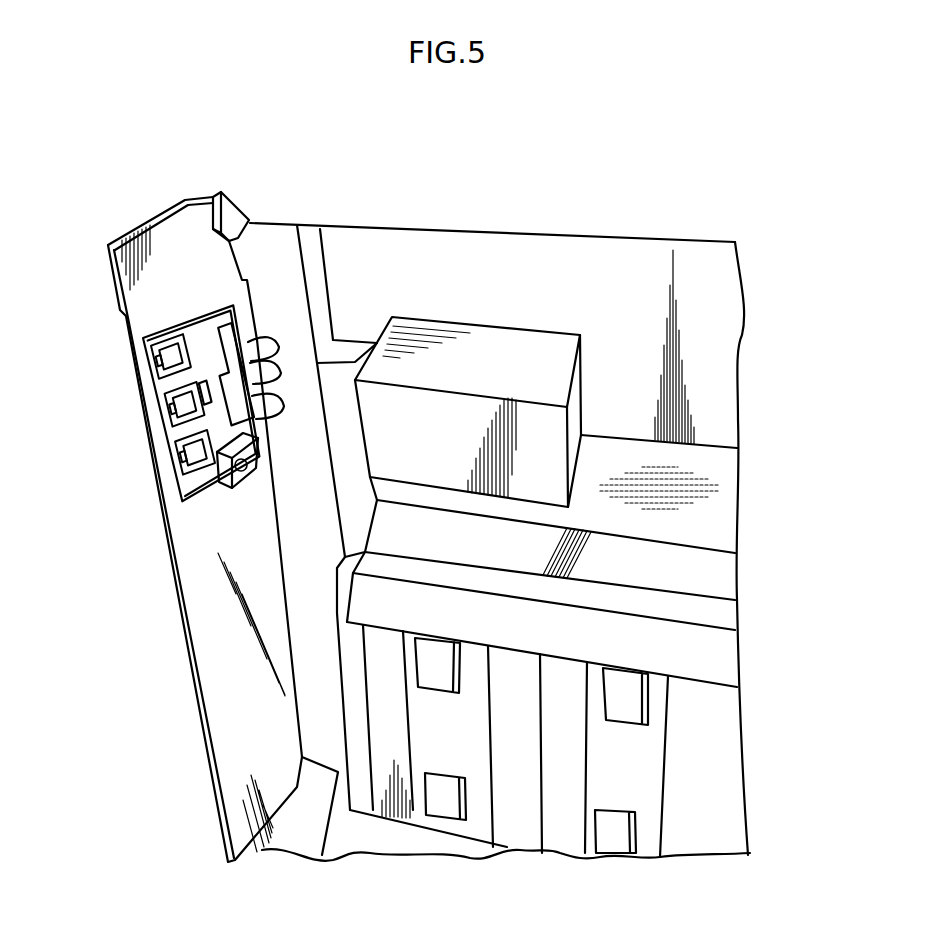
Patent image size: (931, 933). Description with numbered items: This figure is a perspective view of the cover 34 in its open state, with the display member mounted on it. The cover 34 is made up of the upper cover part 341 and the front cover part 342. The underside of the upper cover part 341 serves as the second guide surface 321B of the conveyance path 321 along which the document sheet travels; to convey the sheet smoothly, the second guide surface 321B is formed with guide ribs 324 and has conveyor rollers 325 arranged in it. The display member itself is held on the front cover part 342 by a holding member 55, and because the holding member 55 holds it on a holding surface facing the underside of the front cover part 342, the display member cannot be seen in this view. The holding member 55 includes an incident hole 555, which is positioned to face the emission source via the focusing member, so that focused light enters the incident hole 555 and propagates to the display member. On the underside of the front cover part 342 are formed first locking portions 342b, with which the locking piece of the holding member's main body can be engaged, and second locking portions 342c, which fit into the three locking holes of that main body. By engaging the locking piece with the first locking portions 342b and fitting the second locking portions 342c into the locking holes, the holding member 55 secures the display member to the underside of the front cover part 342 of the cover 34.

The cover 34 is at (442, 230).
The upper cover part 341 is at (652, 272).
The front cover part 342 is at (232, 672).
The first locking portions 342b is at (257, 340).
The second locking portions 342c is at (172, 355).
The holding member 55 is at (188, 307).
The incident hole 555 is at (240, 469).
The conveyance path 321 is at (699, 812).
The second guide surface 321B is at (705, 748).
The conveyor rollers 325 is at (437, 653).
The guide ribs 324 is at (583, 813).